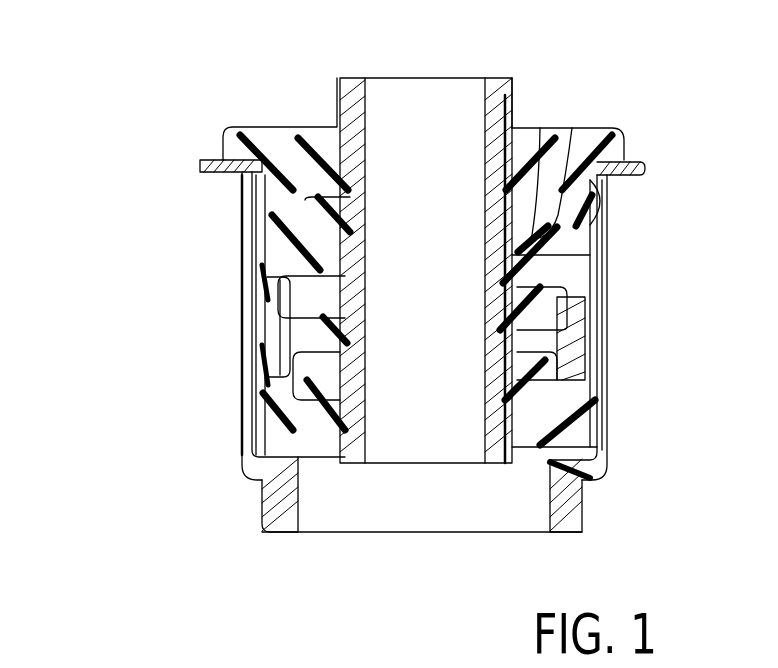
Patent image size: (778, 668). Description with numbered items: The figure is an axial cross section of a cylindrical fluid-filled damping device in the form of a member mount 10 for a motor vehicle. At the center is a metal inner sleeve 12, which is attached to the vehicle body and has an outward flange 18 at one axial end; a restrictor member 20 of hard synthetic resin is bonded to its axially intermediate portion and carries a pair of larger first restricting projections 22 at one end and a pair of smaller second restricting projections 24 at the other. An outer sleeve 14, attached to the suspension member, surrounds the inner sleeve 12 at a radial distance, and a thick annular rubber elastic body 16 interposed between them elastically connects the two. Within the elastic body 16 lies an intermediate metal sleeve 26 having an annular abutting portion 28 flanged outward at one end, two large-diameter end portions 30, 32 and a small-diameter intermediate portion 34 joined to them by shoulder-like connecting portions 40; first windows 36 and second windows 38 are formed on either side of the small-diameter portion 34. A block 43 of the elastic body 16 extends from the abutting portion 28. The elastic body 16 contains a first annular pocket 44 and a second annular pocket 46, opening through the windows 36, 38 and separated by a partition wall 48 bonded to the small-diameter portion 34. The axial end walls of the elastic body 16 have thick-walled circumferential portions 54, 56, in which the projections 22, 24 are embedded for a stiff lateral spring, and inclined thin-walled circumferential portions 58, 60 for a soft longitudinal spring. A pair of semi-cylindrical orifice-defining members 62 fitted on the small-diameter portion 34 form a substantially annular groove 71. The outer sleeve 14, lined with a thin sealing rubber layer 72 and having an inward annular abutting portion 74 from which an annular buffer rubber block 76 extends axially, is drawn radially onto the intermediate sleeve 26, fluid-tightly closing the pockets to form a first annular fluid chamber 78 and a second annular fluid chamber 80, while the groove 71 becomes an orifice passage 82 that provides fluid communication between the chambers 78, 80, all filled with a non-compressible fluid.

The member mount 10 is at (296, 46).
The inner sleeve 12 is at (500, 445).
The outer sleeve 14 is at (607, 253).
The elastic body 16 is at (301, 133).
The outward flange 18 is at (513, 92).
The restrictor member 20 is at (285, 243).
The first restricting projections 22 is at (300, 207).
The second restricting projections 24 is at (327, 410).
The intermediate metal sleeve 26 is at (243, 263).
The annular abutting portion 28 is at (632, 170).
The large-diameter end portion 30 is at (283, 221).
The large-diameter end portion 32 is at (260, 433).
The small-diameter intermediate portion 34 is at (283, 343).
The first windows 36 is at (617, 228).
The second windows 38 is at (590, 403).
The connecting portions 40 is at (270, 318).
The block 43 is at (252, 138).
The first annular pocket 44 is at (590, 278).
The second annular pocket 46 is at (550, 413).
The partition wall 48 is at (506, 289).
The thick-walled circumferential portion 54 is at (236, 258).
The thick-walled circumferential portion 56 is at (298, 420).
The thin-walled circumferential portion 58 is at (541, 227).
The thin-walled circumferential portion 60 is at (583, 480).
The orifice-defining members 62 is at (587, 367).
The annular groove 71 is at (587, 347).
The sealing rubber layer 72 is at (248, 358).
The annular abutting portion 74 is at (266, 475).
The buffer rubber block 76 is at (583, 480).
The first annular fluid chamber 78 is at (322, 303).
The second annular fluid chamber 80 is at (318, 366).
The orifice passage 82 is at (585, 306).